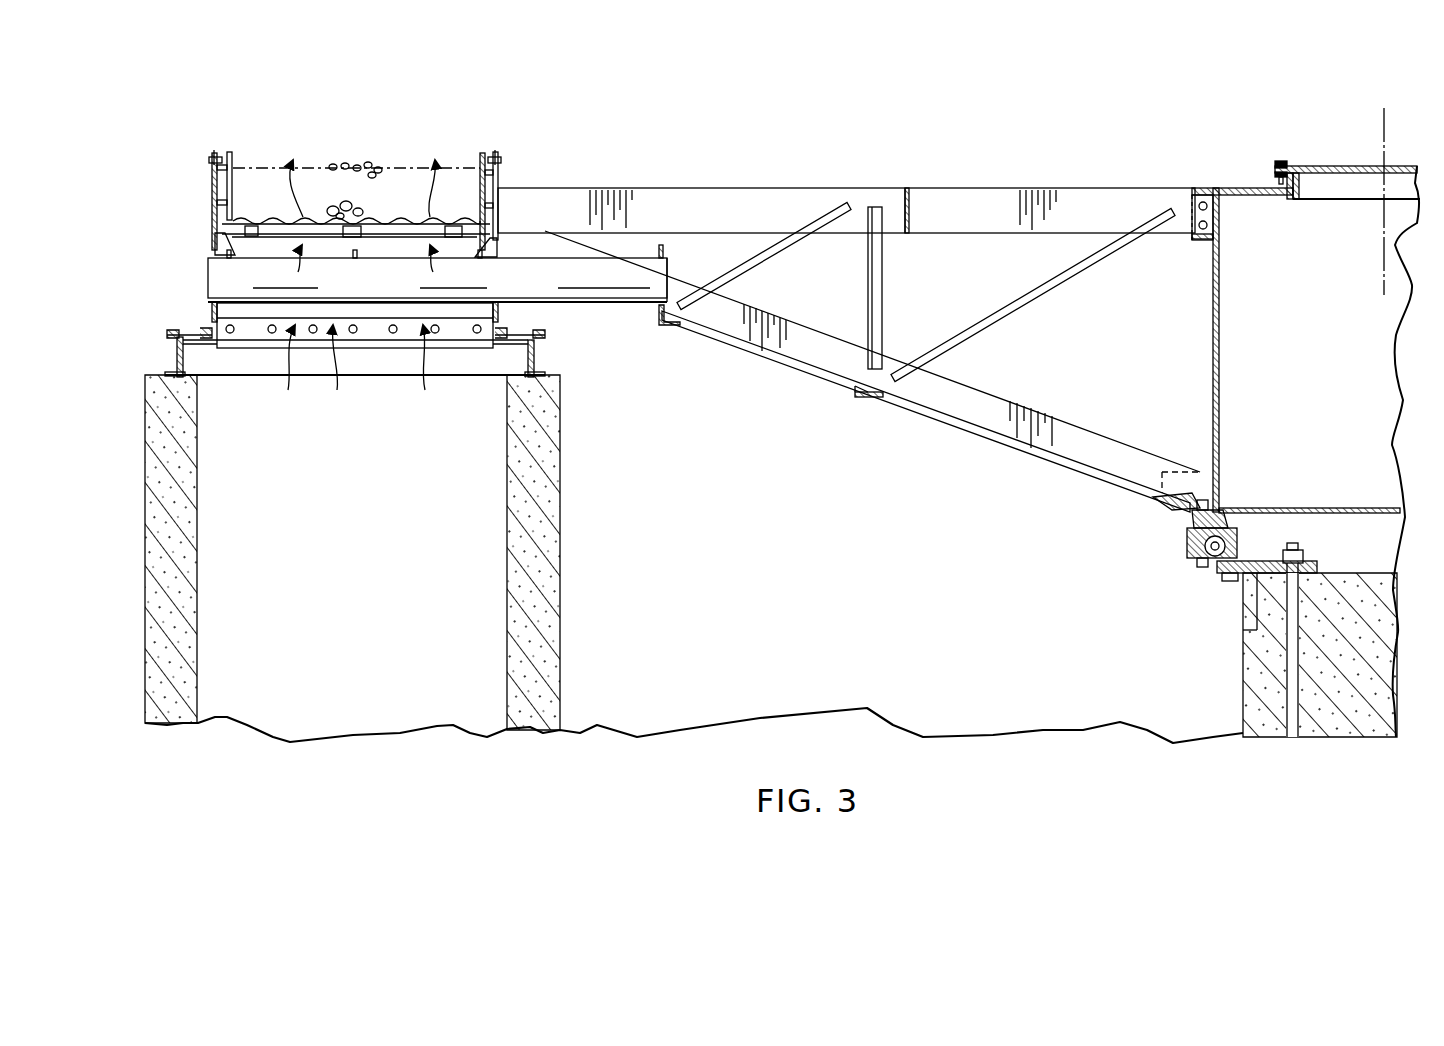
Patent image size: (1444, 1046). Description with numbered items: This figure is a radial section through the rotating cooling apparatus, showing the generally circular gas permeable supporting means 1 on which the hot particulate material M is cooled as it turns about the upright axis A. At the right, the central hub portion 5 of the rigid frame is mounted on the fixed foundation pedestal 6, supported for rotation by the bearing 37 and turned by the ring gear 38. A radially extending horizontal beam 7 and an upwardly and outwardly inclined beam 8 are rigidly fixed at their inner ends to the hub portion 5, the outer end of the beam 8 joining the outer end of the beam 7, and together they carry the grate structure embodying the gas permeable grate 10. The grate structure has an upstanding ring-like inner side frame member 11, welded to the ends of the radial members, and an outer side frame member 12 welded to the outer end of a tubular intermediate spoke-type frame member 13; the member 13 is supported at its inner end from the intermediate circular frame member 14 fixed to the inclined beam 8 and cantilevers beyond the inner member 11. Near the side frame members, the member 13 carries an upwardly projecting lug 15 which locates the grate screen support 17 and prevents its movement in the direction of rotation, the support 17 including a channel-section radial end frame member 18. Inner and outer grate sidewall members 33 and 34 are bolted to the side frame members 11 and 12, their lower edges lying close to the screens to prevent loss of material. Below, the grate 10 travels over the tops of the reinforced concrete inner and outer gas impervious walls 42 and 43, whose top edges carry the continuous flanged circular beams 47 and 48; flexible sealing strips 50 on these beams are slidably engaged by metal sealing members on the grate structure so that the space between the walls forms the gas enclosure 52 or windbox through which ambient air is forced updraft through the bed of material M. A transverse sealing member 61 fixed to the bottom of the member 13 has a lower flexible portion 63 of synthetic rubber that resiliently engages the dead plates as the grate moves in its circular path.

The gas permeable supporting means 1 is at (631, 175).
The central hub portion 5 is at (1213, 350).
The foundation pedestal 6 is at (1243, 690).
The horizontal beam 7 is at (695, 195).
The inclined beam 8 is at (962, 448).
The gas permeable grate 10 is at (277, 217).
The inner side frame member 11 is at (495, 176).
The outer side frame member 12 is at (215, 190).
The intermediate auxiliary spoke-type frame member 13 is at (640, 300).
The intermediate circular frame member 14 is at (675, 320).
The upwardly projecting lug 15 is at (488, 248).
The grate screen support 17 is at (402, 240).
The end frame member 18 is at (265, 243).
The inner grate sidewall member 33 is at (485, 152).
The outer grate sidewall member 34 is at (233, 157).
The bearing 37 is at (1193, 540).
The ring gear 38 is at (1182, 553).
The inner gas impervious wall 42 is at (560, 432).
The outer gas impervious wall 43 is at (198, 430).
The inner flanged circular beam 47 is at (520, 360).
The outer flanged circular beam 48 is at (178, 355).
The flexible sealing strip 50 is at (190, 335).
The gas enclosure 52 is at (465, 605).
The transverse sealing member 61 is at (361, 294).
The lower flexible portion 63 is at (383, 342).
The hot particulate material M is at (378, 168).
The upright axis A is at (1383, 152).